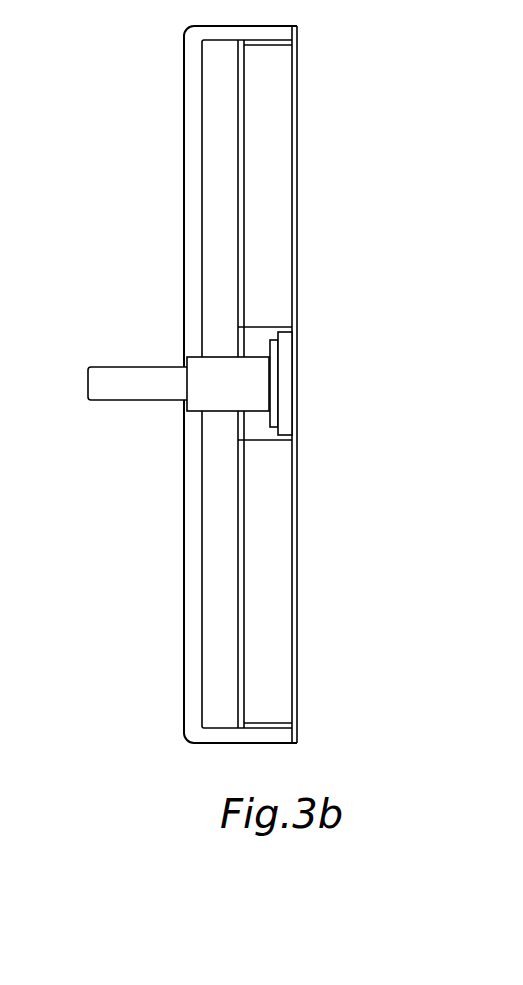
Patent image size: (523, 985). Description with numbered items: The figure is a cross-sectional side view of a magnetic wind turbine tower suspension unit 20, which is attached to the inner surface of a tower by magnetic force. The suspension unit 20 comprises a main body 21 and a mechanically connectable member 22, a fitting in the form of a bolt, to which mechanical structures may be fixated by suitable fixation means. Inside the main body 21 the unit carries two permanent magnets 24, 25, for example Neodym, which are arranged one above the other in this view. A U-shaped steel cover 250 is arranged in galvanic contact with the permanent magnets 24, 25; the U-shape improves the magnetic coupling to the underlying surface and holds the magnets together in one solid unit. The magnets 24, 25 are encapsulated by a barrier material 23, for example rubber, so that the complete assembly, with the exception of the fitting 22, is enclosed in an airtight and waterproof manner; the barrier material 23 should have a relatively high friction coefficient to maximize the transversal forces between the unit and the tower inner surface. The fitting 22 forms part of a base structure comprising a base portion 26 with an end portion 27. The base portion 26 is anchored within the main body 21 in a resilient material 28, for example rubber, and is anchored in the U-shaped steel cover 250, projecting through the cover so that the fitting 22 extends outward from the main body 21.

The wind turbine tower suspension unit 20 is at (200, 375).
The main body 21 is at (185, 40).
The mechanically connectable member 22 is at (122, 380).
The barrier material 23 is at (193, 677).
The magnet 24 is at (262, 228).
The magnet 25 is at (260, 573).
The base portion 26 is at (253, 395).
The end portion 27 is at (283, 387).
The resilient material 28 is at (255, 340).
The U-shaped steel cover 250 is at (222, 175).